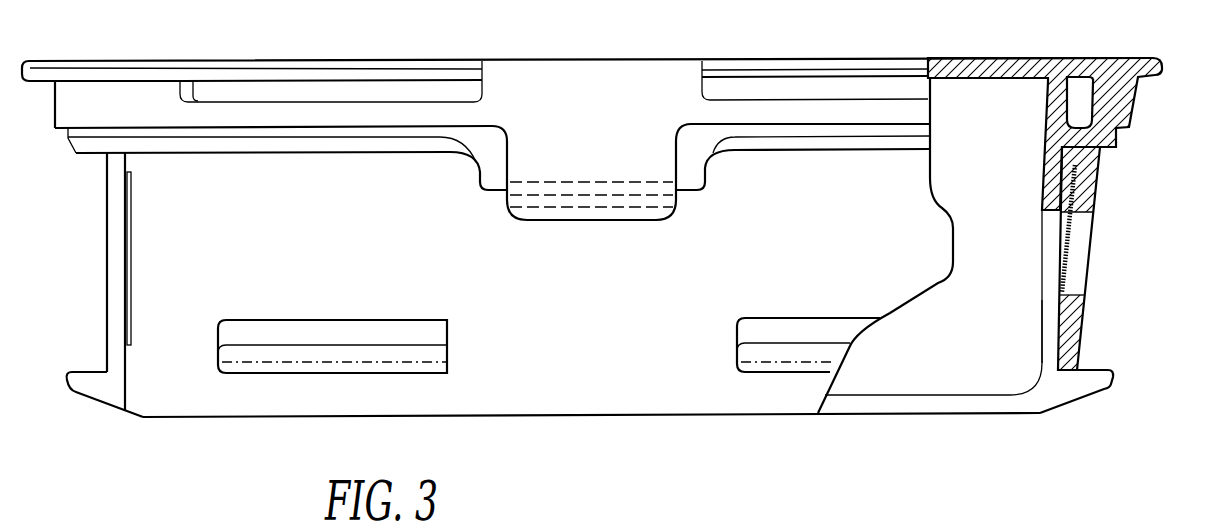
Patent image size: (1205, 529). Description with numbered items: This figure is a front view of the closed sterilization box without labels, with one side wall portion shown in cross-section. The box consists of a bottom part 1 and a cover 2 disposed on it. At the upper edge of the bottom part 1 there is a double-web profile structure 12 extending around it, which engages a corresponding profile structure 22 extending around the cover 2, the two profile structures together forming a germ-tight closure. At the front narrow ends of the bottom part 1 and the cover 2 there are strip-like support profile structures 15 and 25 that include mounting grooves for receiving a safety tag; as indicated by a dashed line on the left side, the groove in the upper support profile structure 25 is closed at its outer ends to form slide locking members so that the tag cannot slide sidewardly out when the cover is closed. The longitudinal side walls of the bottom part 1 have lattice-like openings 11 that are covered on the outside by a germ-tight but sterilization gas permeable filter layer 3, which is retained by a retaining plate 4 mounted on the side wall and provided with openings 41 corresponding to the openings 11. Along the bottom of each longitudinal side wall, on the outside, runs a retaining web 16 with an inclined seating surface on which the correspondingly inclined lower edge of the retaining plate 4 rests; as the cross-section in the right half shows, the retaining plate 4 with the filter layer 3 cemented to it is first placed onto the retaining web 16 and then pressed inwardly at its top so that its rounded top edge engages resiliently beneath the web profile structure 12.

The bottom part 1 is at (697, 403).
The cover 2 is at (745, 68).
The filter layer 3 is at (124, 232).
The retaining plate 4 is at (107, 283).
The lattice-like openings 11 is at (1046, 284).
The double-web profile structure 12 is at (1100, 107).
The support profile structure 15 is at (315, 340).
The retaining web 16 is at (90, 389).
The profile structure 22 is at (1125, 72).
The upper support profile structure 25 is at (250, 87).
The openings 41 is at (1078, 278).